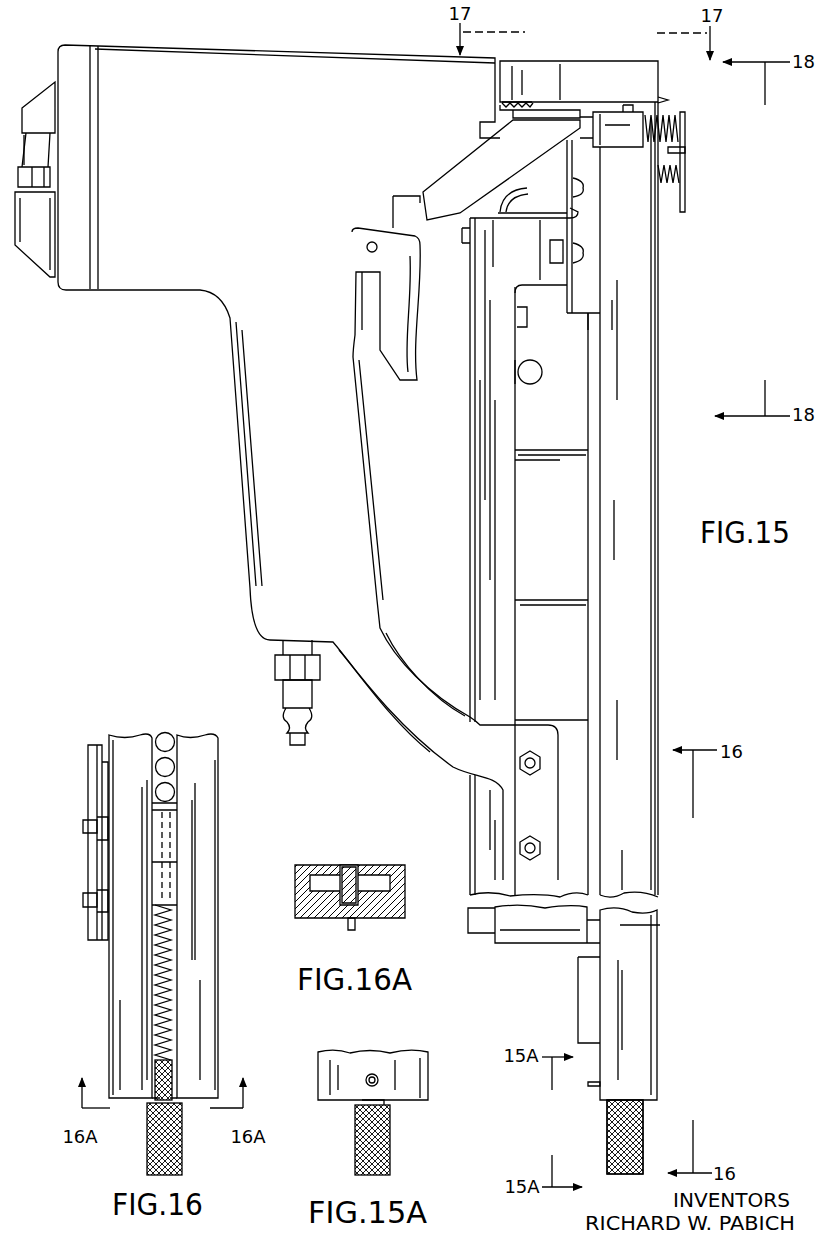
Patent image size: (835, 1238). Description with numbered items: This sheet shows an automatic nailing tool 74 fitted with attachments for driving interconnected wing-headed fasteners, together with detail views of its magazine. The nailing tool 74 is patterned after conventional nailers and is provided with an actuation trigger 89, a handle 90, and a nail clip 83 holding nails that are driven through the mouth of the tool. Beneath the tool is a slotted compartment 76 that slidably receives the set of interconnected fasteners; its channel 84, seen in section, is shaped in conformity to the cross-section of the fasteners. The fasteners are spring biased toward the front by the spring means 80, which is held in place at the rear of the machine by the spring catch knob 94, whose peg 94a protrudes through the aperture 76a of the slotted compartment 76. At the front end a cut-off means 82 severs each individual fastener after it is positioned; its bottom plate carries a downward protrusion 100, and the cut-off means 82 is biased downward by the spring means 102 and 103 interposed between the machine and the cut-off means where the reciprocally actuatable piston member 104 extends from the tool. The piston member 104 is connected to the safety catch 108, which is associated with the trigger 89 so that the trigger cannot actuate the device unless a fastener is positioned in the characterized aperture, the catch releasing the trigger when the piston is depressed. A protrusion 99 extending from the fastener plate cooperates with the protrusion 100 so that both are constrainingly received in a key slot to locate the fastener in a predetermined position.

In FIG. 15, the automatic nailing tool 74 is at (200, 49).
In FIG. 15, the slotted compartment 76 is at (647, 642).
In FIG. 15A, the aperture 76a is at (372, 1075).
In FIG. 16, the spring means 80 is at (160, 977).
In FIG. 15, the cut-off means 82 is at (688, 198).
In FIG. 15, the nail clip 83 is at (566, 573).
In FIG. 16A, the channel 84 is at (403, 877).
In FIG. 15, the actuation trigger 89 is at (410, 380).
In FIG. 15, the handle 90 is at (273, 546).
In FIG. 15, the spring catch knob 94 is at (642, 1120).
In FIG. 15A, the spring catch knob 94 is at (390, 1150).
In FIG. 15, the peg 94a is at (592, 1084).
In FIG. 16A, the peg 94a is at (354, 925).
In FIG. 15A, the peg 94a is at (378, 1084).
In FIG. 15, the protrusion 99 is at (664, 100).
In FIG. 15, the protrusion 100 is at (688, 150).
In FIG. 15, the spring means 102 is at (668, 187).
In FIG. 15, the spring means 103 is at (670, 117).
In FIG. 15, the reciprocally actuatable piston member 104 is at (687, 125).
In FIG. 15, the safety catch 108 is at (455, 180).